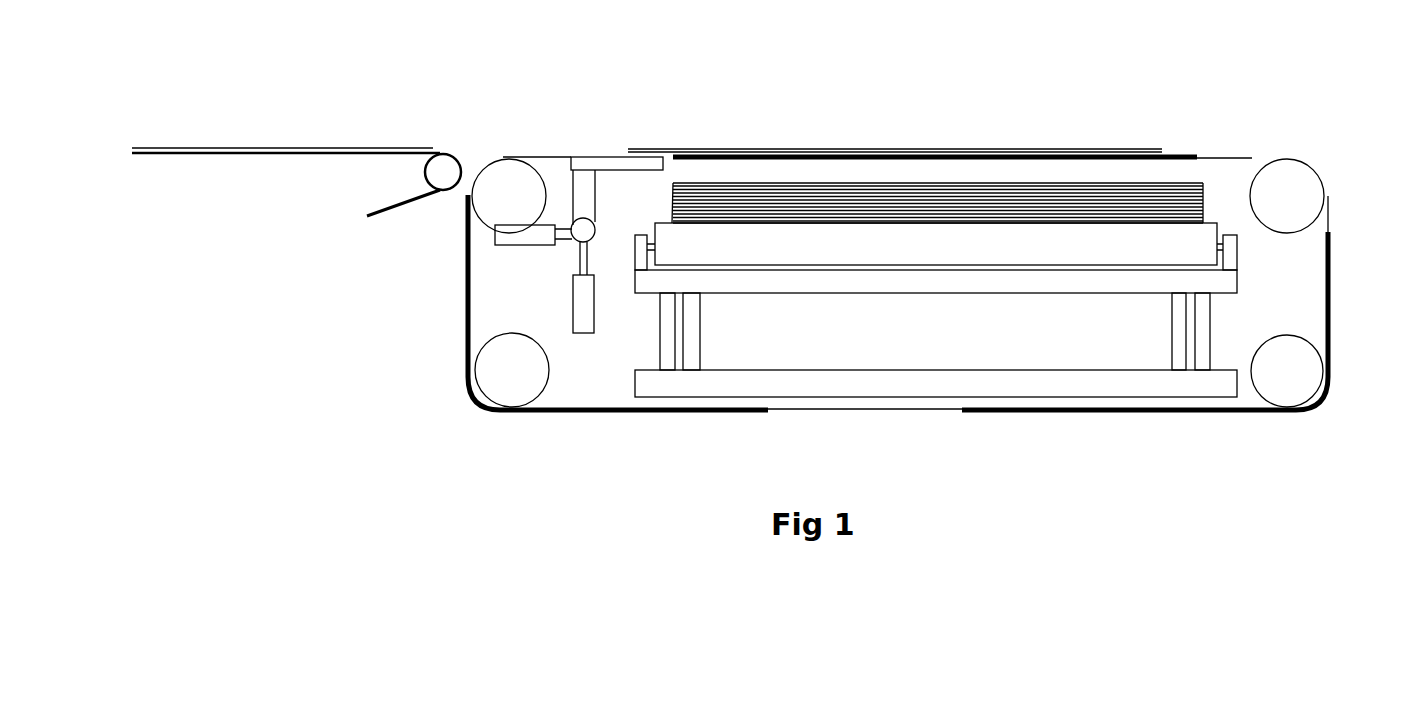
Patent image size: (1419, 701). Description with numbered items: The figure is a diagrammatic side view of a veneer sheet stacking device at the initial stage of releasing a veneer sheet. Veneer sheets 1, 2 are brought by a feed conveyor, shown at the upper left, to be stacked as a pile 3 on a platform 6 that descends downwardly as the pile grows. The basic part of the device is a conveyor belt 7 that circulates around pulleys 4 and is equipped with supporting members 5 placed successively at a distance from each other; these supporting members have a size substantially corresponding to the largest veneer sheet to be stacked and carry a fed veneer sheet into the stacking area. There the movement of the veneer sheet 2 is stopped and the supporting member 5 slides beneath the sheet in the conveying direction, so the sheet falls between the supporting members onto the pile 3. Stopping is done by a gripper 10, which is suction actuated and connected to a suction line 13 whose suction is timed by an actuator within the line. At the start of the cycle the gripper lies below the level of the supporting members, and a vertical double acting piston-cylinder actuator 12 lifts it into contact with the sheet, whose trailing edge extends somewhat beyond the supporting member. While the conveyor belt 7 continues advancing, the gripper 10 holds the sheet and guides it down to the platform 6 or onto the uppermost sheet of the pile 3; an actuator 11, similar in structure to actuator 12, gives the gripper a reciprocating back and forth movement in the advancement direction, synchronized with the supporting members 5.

The veneer sheet 1 is at (295, 135).
The veneer sheet 2 is at (680, 150).
The pile 3 is at (1200, 184).
The pulleys 4 is at (1300, 184).
The supporting members 5 is at (1186, 153).
The platform 6 is at (760, 245).
The conveyor belt 7 is at (893, 410).
The gripper 10 is at (598, 157).
The actuator 11 is at (532, 237).
The double acting piston-cylinder actuator 12 is at (583, 320).
The suction line 13 is at (573, 237).